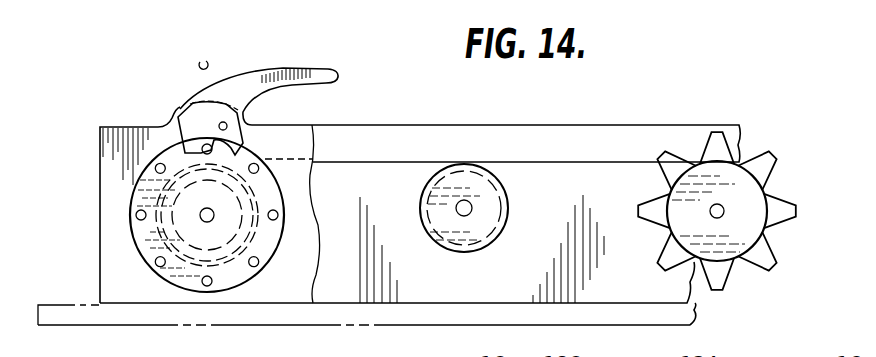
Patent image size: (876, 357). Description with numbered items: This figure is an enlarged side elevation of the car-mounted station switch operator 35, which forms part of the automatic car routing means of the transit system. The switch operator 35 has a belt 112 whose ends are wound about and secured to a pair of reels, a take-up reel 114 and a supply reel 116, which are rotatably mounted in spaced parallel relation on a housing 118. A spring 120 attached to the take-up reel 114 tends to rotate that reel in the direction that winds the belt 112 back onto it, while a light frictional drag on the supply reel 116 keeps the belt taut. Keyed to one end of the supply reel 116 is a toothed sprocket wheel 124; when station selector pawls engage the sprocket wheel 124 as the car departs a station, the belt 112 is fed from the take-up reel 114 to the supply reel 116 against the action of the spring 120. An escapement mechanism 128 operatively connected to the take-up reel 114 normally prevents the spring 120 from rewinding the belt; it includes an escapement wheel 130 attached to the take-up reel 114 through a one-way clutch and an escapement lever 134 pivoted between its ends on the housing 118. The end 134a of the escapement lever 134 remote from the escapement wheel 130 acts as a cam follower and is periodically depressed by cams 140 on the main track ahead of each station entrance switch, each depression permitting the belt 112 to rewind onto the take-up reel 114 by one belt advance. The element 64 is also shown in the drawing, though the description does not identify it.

The housing 118 is at (100, 256).
The belt 112 is at (620, 160).
The escapement wheel 130 is at (135, 182).
The take-up reel 114 is at (224, 247).
The spring 120 is at (233, 245).
The escapement mechanism 128 is at (258, 68).
The escapement lever 134 is at (335, 79).
The end of the escapement lever 134a is at (287, 68).
The cam 140 is at (196, 62).
The toothed sprocket wheel 124 is at (738, 217).
The supply reel 116 is at (730, 252).
The switch operator 35 is at (683, 125).
The bar 64 is at (68, 315).